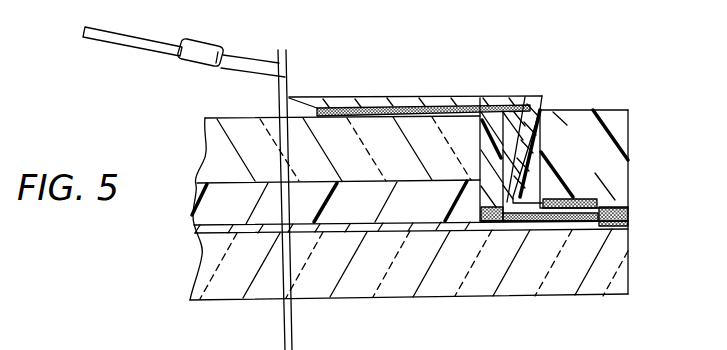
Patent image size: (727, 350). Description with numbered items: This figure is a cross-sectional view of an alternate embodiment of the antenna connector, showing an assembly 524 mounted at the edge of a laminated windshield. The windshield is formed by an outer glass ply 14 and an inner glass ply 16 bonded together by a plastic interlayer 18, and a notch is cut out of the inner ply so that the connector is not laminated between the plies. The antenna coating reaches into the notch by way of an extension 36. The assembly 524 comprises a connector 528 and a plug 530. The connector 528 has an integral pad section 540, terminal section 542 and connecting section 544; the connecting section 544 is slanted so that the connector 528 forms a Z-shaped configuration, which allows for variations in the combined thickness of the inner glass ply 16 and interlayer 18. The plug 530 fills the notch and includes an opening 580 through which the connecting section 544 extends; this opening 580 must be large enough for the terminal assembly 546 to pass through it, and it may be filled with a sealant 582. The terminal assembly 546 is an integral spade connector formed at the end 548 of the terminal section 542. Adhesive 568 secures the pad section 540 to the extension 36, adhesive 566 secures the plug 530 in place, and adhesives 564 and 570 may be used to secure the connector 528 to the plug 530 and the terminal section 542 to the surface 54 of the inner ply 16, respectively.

The outer glass ply 14 is at (202, 265).
The inner glass ply 16 is at (202, 157).
The plastic interlayer 18 is at (197, 193).
The extension 36 is at (200, 231).
The surface of ply 54 is at (203, 117).
The assembly 524 is at (439, 72).
The connector 528 is at (542, 97).
The plug 530 is at (612, 110).
The pad section 540 is at (563, 227).
The terminal section 542 is at (410, 96).
The connecting section 544 is at (500, 144).
The terminal assembly 546 is at (214, 46).
The end of terminal section 548 is at (235, 68).
The adhesive 564 is at (586, 199).
The adhesive 566 is at (630, 212).
The adhesive 568 is at (531, 222).
The adhesive 570 is at (343, 108).
The opening 580 is at (540, 183).
The sealant 582 is at (517, 123).